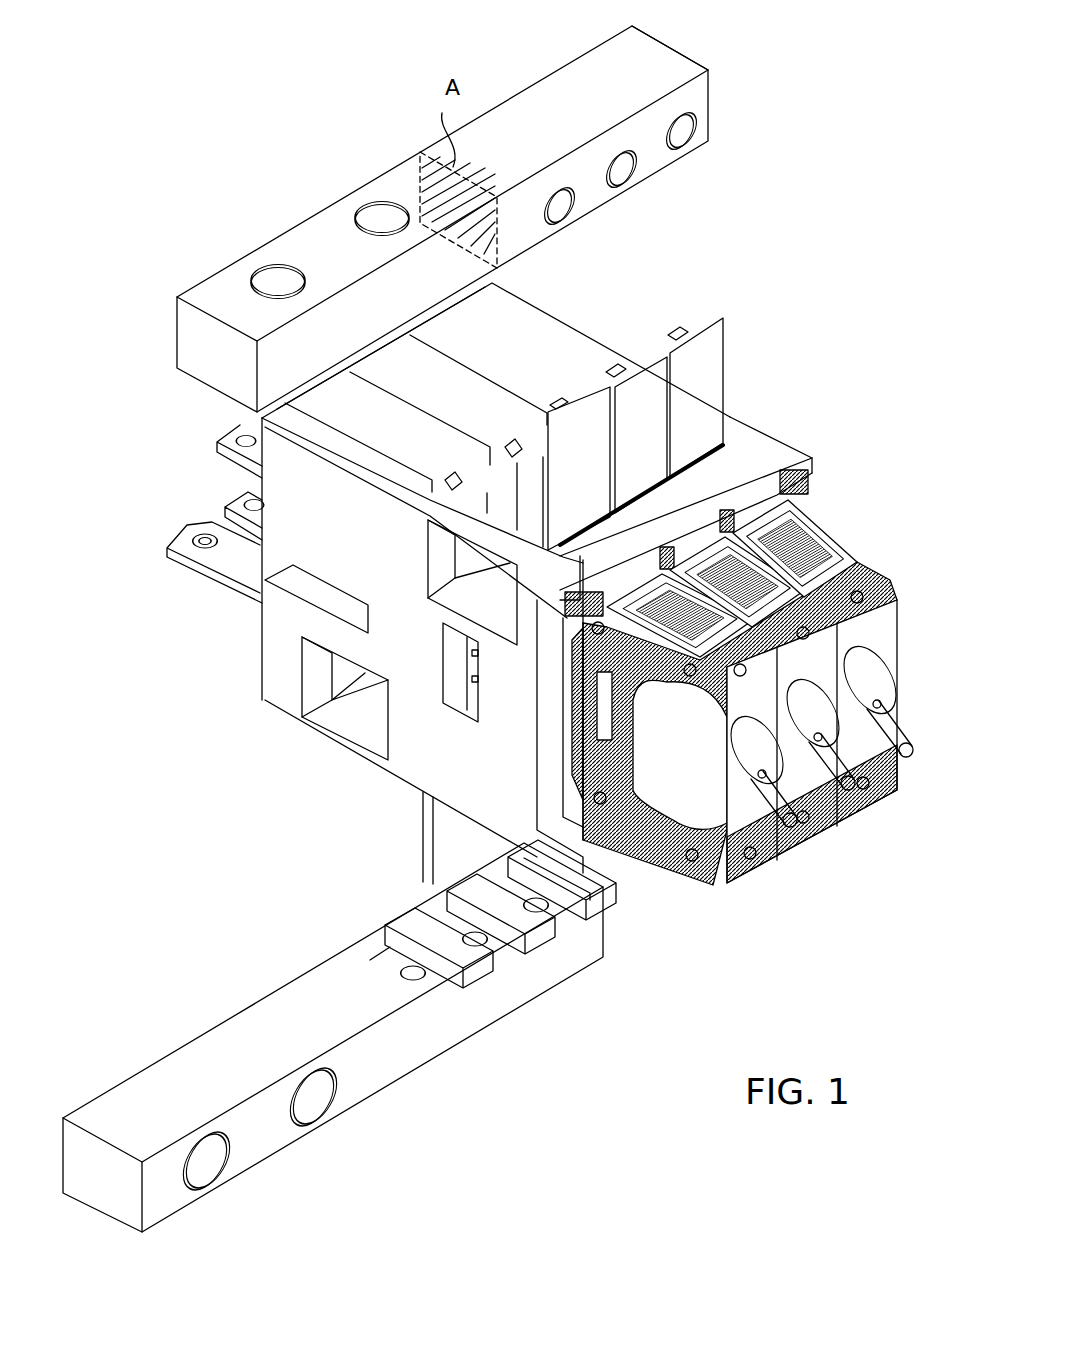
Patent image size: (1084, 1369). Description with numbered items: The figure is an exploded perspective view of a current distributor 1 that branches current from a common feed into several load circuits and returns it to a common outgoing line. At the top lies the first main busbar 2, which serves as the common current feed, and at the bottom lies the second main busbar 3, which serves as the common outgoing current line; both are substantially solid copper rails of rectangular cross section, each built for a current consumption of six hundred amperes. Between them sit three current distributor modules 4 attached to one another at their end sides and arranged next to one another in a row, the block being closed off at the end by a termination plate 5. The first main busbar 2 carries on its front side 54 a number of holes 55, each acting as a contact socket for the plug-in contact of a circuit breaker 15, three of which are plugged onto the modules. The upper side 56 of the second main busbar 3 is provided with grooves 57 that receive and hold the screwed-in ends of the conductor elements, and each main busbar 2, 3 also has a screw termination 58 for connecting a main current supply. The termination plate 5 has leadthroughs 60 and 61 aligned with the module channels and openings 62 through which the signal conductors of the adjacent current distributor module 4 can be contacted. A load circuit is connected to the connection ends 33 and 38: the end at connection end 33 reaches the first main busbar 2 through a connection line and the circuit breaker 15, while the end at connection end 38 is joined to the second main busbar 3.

The current distributor 1 is at (868, 112).
The first main busbar 2 is at (320, 243).
The second main busbar 3 is at (205, 1052).
The current distributor module 4 is at (390, 430).
The termination plate 5 is at (277, 645).
The circuit breaker 15 is at (880, 562).
The connection end 33 is at (222, 445).
The connection end 38 is at (168, 536).
The front side 54 is at (693, 100).
The holes 55 is at (563, 215).
The upper side 56 is at (312, 995).
The grooves 57 is at (442, 992).
The screw termination 58 is at (265, 283).
The leadthrough 60 is at (425, 567).
The leadthrough 61 is at (392, 728).
The openings 62 is at (478, 677).